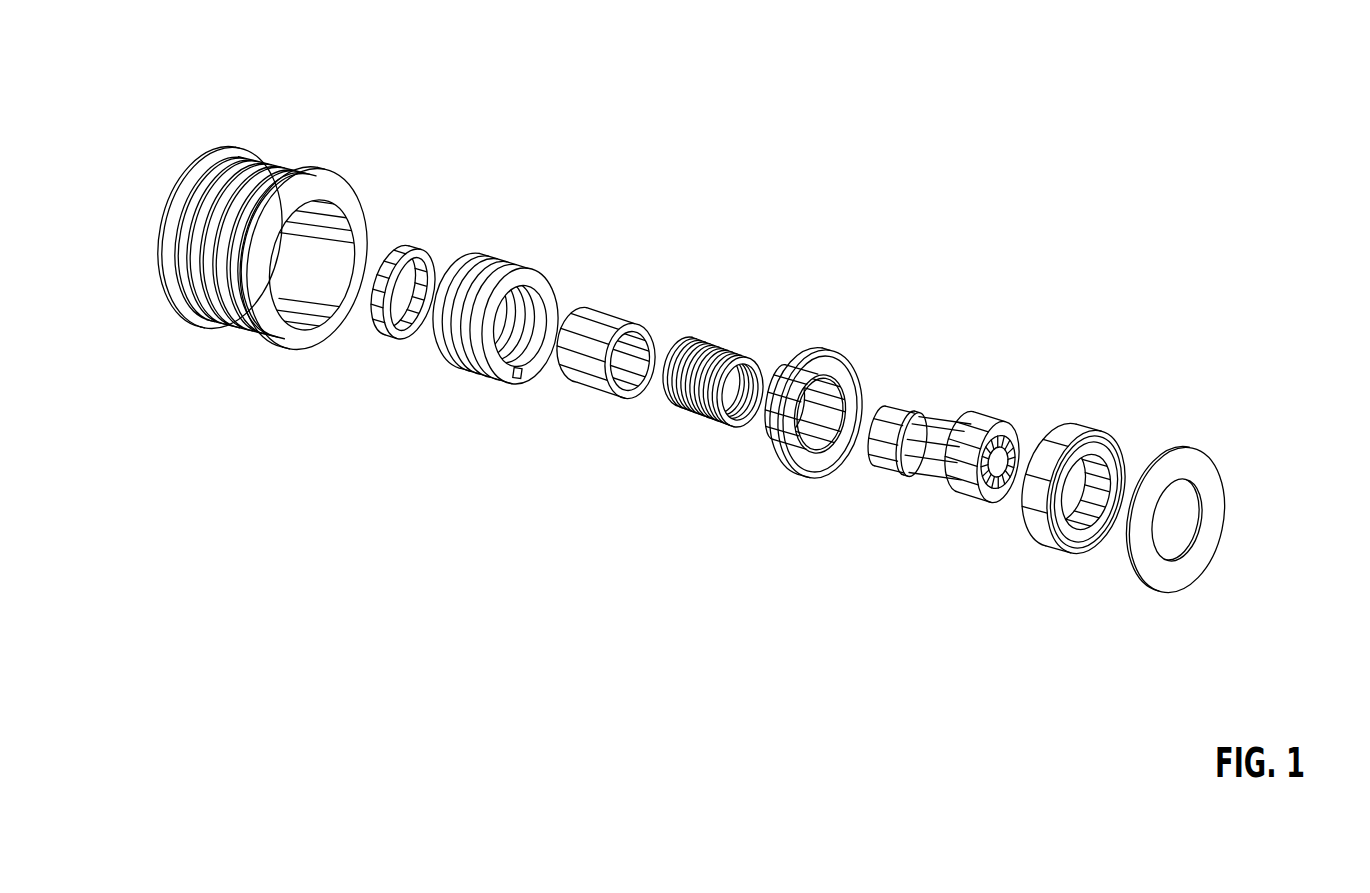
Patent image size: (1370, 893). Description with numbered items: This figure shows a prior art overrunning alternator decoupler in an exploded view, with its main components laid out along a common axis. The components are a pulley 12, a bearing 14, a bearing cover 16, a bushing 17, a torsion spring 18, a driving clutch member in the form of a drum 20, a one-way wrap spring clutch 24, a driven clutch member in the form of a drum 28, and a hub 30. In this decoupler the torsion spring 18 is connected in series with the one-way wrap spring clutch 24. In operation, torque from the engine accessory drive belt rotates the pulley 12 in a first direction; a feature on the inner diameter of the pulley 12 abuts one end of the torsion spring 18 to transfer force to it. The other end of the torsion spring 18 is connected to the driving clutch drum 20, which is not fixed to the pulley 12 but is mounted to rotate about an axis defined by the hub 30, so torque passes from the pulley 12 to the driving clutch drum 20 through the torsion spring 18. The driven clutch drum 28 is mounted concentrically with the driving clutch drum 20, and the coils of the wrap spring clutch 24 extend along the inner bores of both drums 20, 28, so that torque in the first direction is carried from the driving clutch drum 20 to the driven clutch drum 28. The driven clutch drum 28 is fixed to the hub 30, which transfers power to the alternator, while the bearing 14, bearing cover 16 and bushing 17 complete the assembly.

The pulley 12 is at (267, 177).
The bushing 17 is at (405, 250).
The torsion spring 18 is at (495, 283).
The driven clutch member 28 is at (597, 317).
The one-way wrap spring clutch 24 is at (712, 355).
The driving clutch member 20 is at (835, 365).
The hub 30 is at (932, 428).
The bearing 14 is at (1082, 447).
The bearing cover 16 is at (1193, 465).